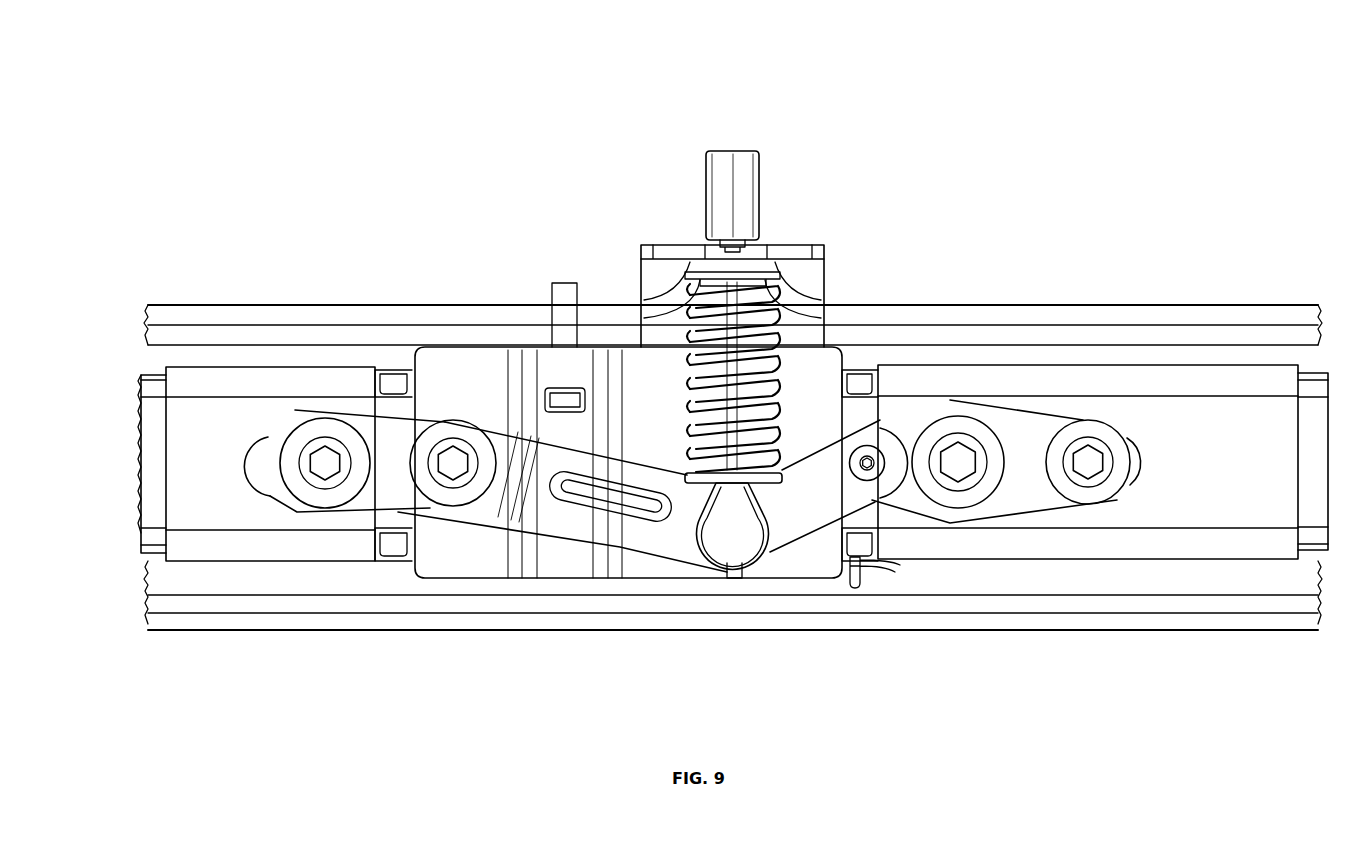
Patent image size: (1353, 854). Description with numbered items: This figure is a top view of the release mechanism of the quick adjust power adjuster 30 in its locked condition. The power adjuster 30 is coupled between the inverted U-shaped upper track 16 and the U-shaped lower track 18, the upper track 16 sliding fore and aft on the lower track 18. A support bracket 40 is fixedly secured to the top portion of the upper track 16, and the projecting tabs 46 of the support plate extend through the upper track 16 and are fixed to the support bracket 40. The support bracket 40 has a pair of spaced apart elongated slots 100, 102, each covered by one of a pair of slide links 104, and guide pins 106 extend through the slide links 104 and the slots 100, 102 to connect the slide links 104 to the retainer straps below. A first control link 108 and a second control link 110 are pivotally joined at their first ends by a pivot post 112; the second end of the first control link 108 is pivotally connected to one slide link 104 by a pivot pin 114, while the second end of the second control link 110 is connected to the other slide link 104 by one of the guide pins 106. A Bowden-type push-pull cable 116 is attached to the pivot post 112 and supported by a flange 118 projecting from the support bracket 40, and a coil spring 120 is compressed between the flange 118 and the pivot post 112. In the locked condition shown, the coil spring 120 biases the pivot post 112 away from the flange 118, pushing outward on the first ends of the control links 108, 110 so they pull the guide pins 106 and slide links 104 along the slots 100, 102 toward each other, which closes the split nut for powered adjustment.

The upper track 16 is at (156, 499).
The lower track 18 is at (193, 622).
The quick adjust power adjuster 30 is at (418, 172).
The support bracket 40 is at (205, 382).
The projecting tabs 46 is at (556, 400).
The elongated slot 100 is at (1125, 500).
The elongated slot 102 is at (278, 495).
The slide links 104 is at (396, 497).
The guide pins 106 is at (443, 420).
The first control link 108 is at (790, 522).
The second control link 110 is at (598, 527).
The pivot post 112 is at (720, 545).
The pivot pin 114 is at (875, 474).
The Bowden-type push-pull cable 116 is at (742, 148).
The flange 118 is at (817, 252).
The coil spring 120 is at (775, 336).